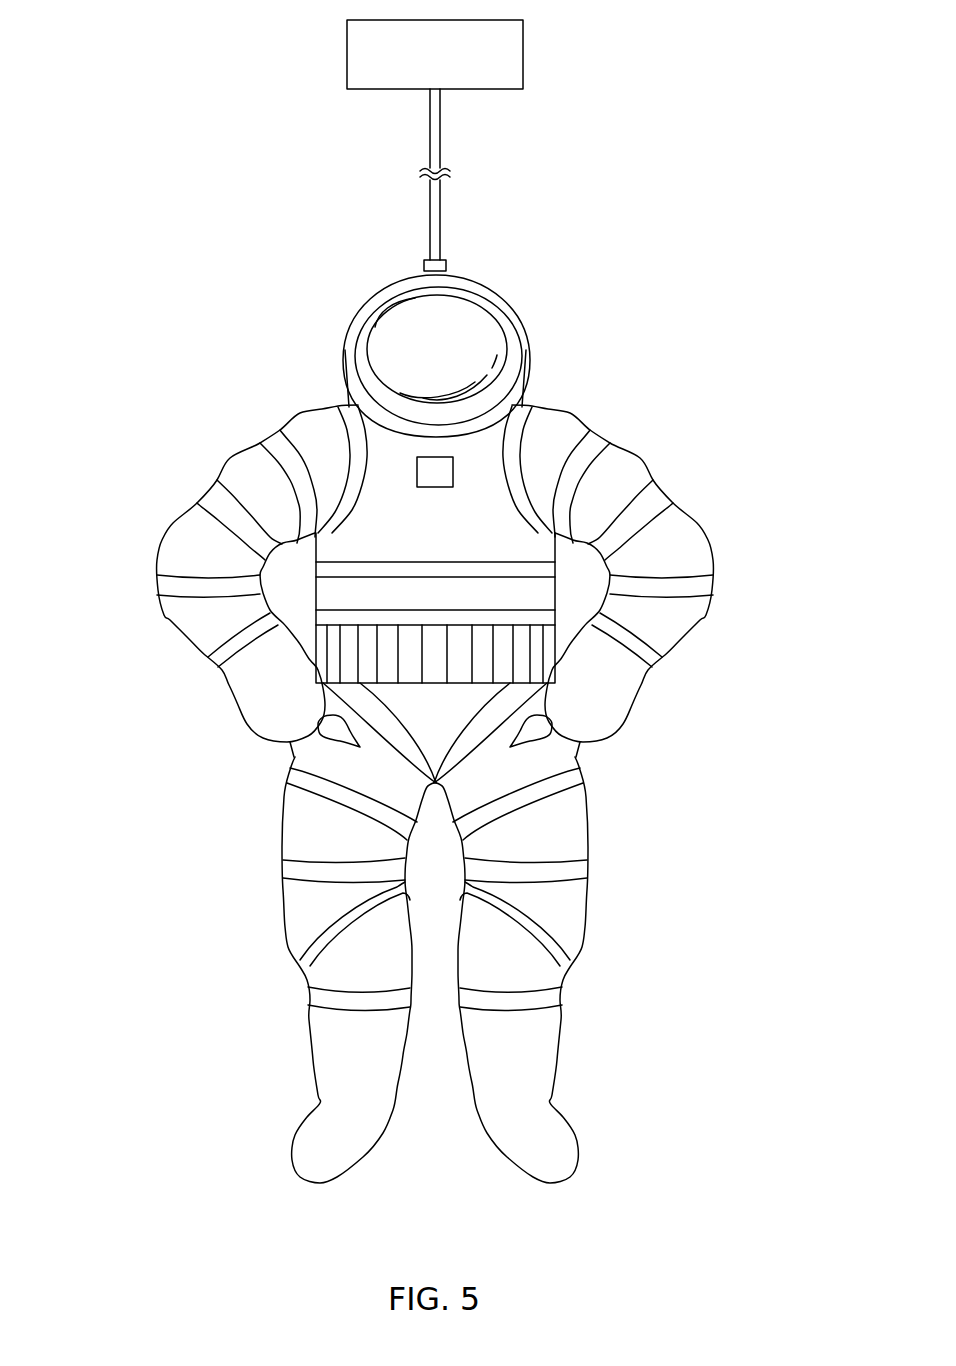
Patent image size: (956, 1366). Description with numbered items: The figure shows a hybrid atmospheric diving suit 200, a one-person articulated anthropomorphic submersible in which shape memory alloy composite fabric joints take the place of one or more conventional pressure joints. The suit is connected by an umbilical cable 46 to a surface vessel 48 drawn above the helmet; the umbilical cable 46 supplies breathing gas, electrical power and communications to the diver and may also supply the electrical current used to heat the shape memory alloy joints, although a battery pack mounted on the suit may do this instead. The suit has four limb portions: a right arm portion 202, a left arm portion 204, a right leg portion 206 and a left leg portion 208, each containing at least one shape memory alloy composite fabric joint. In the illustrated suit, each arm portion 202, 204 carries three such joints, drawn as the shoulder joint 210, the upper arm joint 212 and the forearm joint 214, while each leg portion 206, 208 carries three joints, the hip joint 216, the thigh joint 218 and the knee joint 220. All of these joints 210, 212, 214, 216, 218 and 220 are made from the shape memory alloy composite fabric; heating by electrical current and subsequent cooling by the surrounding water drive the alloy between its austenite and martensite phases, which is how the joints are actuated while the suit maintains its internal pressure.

The surface vessel 48 is at (358, 47).
The umbilical cable 46 is at (430, 133).
The hybrid atmospheric diving suit 200 is at (435, 672).
The right arm limb portion 202 is at (122, 422).
The left arm limb portion 204 is at (748, 422).
The right leg limb portion 206 is at (175, 862).
The left leg limb portion 208 is at (695, 862).
The shape memory alloy composite fabric joint 210 is at (305, 427).
The shape memory alloy composite fabric joint 212 is at (180, 540).
The shape memory alloy composite fabric joint 214 is at (190, 631).
The shape memory alloy composite fabric joint 216 is at (302, 752).
The shape memory alloy composite fabric joint 218 is at (293, 924).
The shape memory alloy composite fabric joint 220 is at (313, 977).